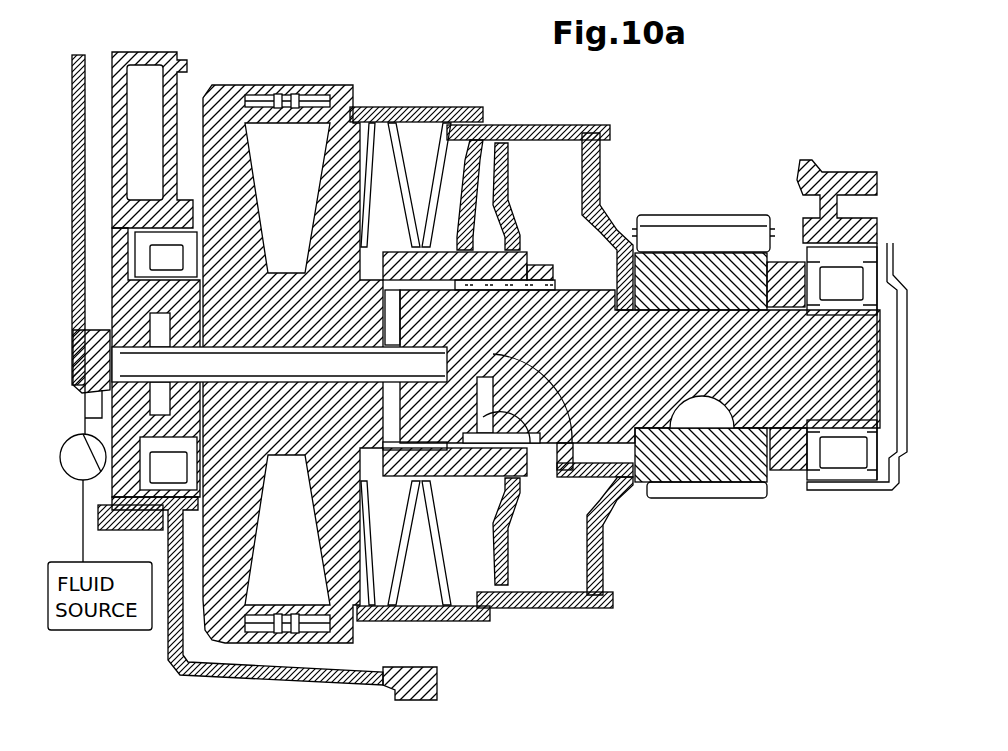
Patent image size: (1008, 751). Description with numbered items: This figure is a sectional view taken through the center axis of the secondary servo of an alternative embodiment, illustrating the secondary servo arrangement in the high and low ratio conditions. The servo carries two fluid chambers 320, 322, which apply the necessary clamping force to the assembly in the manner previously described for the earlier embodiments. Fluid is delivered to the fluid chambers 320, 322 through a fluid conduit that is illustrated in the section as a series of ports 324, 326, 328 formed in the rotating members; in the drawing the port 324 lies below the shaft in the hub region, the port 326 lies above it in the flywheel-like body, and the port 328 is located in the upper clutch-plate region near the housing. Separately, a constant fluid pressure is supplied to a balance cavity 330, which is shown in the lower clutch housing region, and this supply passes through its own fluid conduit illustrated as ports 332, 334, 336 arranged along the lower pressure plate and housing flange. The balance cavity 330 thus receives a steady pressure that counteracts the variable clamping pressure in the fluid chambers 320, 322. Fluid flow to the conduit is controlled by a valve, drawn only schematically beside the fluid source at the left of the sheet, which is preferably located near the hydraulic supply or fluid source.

The fluid chamber 320 is at (424, 108).
The fluid chamber 322 is at (566, 181).
The port 324 is at (290, 386).
The port 326 is at (393, 310).
The port 328 is at (423, 140).
The balance cavity 330 is at (570, 573).
The port 332 is at (557, 440).
The port 334 is at (537, 455).
The port 336 is at (413, 603).